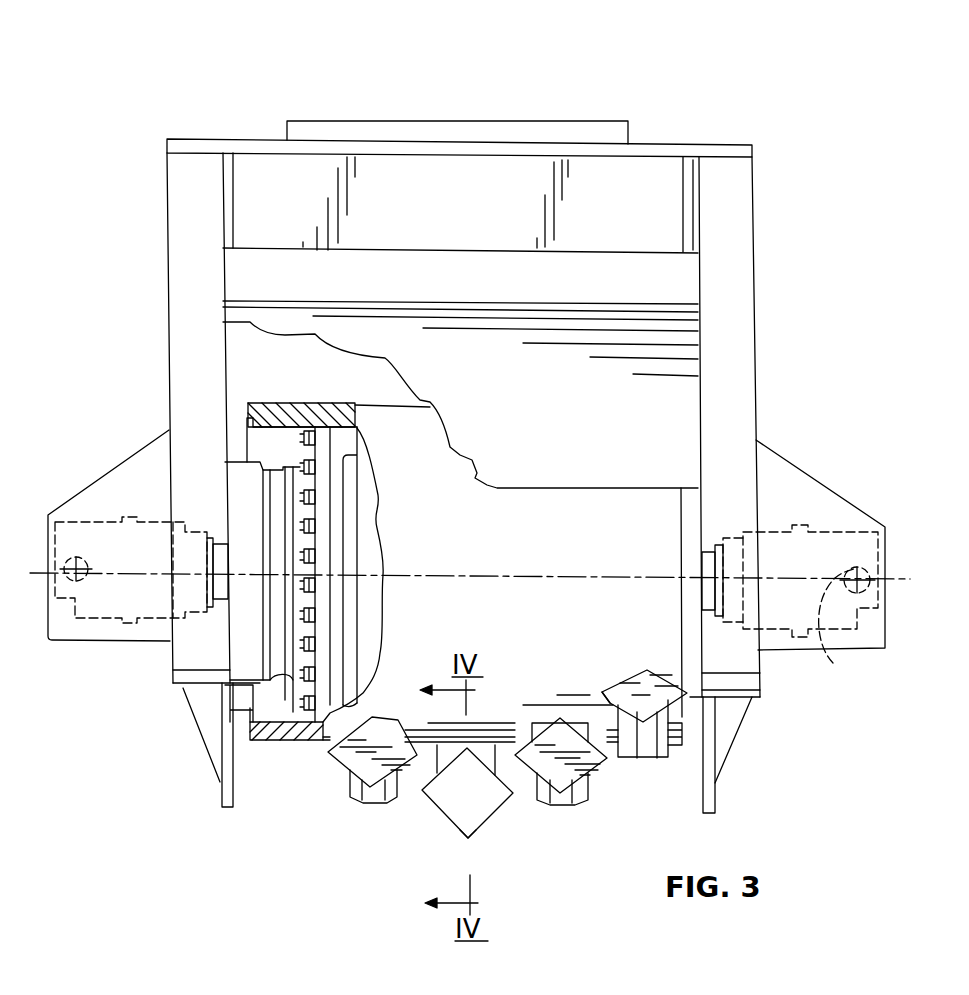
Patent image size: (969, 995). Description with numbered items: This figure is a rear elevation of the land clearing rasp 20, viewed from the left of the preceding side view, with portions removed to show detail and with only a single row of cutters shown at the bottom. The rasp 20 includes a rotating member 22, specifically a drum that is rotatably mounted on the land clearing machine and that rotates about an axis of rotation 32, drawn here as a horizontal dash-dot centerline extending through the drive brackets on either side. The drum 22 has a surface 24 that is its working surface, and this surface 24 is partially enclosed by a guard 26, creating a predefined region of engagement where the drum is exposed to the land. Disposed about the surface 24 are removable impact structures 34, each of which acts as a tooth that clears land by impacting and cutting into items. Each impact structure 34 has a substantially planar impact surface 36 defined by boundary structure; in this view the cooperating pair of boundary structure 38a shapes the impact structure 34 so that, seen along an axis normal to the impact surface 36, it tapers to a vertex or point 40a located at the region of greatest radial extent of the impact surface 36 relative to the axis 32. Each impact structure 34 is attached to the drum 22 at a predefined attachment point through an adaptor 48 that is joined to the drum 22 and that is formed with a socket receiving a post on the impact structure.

The land clearing rasp 20 is at (707, 100).
The rotating member 22 is at (497, 623).
The surface 24 is at (283, 742).
The guard 26 is at (587, 436).
The axis of rotation 32 is at (836, 650).
The impact structure 34 is at (418, 814).
The impact surface 36 is at (482, 802).
The boundary structure 38a is at (450, 822).
The vertex or point 40a is at (470, 838).
The adaptor 48 is at (567, 803).